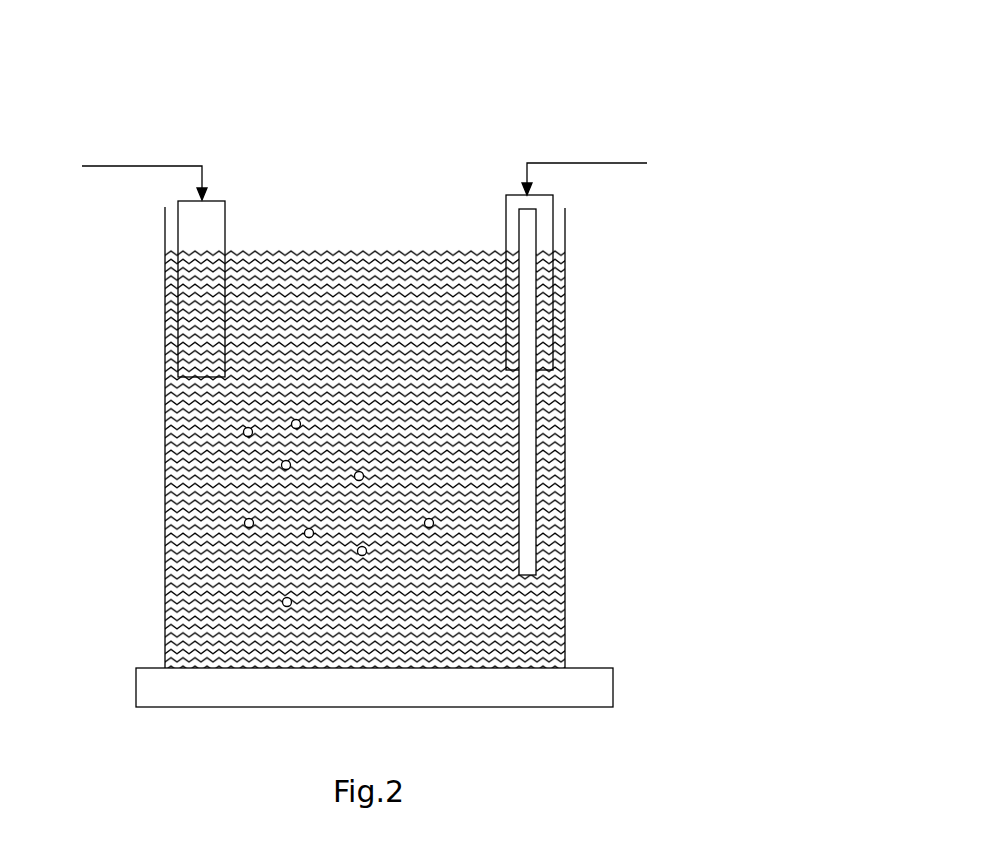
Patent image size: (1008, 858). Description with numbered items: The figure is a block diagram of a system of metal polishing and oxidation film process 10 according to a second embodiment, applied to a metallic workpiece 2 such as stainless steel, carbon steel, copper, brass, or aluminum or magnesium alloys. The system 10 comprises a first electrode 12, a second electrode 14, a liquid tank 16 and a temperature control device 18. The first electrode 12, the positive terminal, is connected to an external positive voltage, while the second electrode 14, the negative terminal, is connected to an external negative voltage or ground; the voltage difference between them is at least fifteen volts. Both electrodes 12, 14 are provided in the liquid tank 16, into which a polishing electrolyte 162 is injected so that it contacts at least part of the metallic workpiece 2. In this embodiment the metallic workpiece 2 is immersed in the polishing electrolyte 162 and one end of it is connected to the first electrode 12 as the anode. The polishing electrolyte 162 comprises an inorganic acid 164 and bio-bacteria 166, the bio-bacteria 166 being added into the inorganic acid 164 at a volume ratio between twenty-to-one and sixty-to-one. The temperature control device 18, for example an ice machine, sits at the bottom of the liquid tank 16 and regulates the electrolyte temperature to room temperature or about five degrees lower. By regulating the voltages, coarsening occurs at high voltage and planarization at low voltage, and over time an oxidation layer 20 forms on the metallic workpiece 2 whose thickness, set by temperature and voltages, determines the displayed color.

The system of metal polishing and oxidation film process 10 is at (62, 40).
The metallic workpiece 2 is at (529, 440).
The first electrode 12 is at (506, 212).
The second electrode 14 is at (225, 226).
The liquid tank 16 is at (565, 551).
The temperature control device 18 is at (593, 683).
The oxidation layer 20 is at (535, 504).
The polishing electrolyte 162 is at (300, 458).
The inorganic acid 164 is at (210, 508).
The bio-bacteria 166 is at (282, 601).